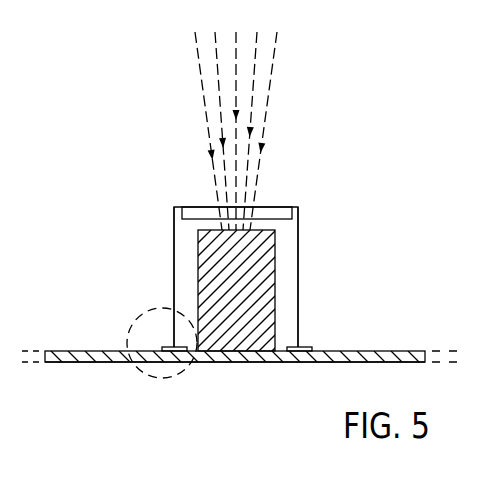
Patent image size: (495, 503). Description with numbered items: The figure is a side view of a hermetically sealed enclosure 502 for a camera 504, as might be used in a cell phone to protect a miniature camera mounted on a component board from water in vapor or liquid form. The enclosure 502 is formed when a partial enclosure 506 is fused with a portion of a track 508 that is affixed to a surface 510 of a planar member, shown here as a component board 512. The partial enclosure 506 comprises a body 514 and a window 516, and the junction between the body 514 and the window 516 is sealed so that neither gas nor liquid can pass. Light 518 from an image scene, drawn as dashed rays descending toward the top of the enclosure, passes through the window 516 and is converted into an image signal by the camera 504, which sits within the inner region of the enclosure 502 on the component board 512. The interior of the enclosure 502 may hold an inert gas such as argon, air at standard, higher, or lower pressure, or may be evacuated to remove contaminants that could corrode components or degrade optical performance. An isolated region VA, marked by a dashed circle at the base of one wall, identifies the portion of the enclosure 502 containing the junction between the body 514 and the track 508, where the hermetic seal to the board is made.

The hermetically sealed enclosure 502 is at (143, 275).
The camera 504 is at (277, 262).
The partial enclosure 506 is at (153, 195).
The track 508 is at (313, 347).
The surface 510 is at (79, 332).
The component board 512 is at (93, 363).
The body 514 is at (298, 288).
The window 516 is at (278, 205).
The light 518 is at (265, 125).
The isolated region VA is at (172, 378).